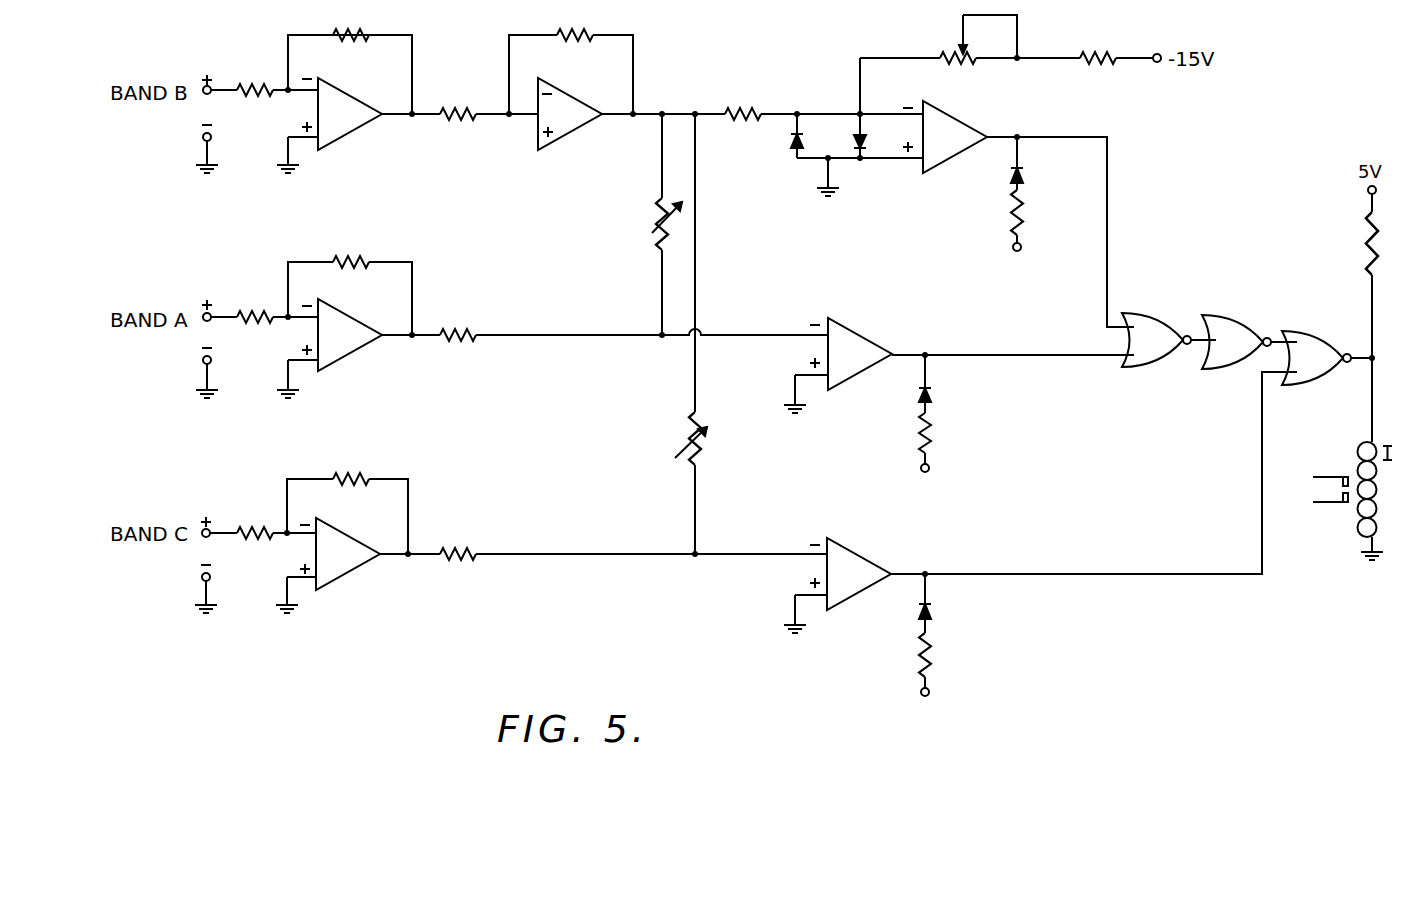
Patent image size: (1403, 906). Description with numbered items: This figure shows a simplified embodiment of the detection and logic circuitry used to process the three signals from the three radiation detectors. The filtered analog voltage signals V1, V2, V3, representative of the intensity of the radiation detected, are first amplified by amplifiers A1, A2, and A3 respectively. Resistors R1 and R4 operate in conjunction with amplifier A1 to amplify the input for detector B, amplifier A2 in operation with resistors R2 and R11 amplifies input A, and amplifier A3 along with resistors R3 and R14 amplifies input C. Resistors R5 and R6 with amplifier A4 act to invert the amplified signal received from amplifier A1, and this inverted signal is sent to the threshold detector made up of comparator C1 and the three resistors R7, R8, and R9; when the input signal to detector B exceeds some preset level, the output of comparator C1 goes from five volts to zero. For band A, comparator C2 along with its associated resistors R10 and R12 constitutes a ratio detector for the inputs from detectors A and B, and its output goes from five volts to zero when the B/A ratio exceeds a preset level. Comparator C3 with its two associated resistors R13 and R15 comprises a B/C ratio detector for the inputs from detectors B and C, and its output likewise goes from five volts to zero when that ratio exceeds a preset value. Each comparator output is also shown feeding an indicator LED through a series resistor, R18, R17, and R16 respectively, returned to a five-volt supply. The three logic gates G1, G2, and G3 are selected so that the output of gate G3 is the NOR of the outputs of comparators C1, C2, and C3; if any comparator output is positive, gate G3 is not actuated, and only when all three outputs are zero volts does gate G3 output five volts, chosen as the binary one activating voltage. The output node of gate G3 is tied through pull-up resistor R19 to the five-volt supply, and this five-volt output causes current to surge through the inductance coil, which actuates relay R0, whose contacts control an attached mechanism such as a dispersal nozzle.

The filtered analog voltage signal V1 is at (207, 111).
The filtered analog voltage signal V2 is at (207, 336).
The filtered analog voltage signal V3 is at (206, 552).
The resistor R1 is at (255, 76).
The resistor R2 is at (255, 303).
The resistor R3 is at (255, 519).
The resistor R4 is at (351, 23).
The resistor R5 is at (458, 99).
The resistor R6 is at (575, 23).
The resistor R7 is at (743, 99).
The resistor R8 is at (958, 73).
The resistor R9 is at (1098, 44).
The resistor R10 is at (647, 224).
The resistor R11 is at (355, 250).
The resistor R12 is at (461, 319).
The resistor R13 is at (677, 334).
The resistor R14 is at (355, 467).
The resistor R15 is at (463, 538).
The LED resistor R16 is at (948, 672).
The LED resistor R17 is at (948, 451).
The LED resistor R18 is at (1037, 217).
The pull-up resistor R19 is at (1353, 243).
The relay R0 is at (1352, 489).
The amplifier A1 is at (342, 114).
The amplifier A2 is at (342, 335).
The amplifier A3 is at (340, 554).
The amplifier A4 is at (570, 114).
The comparator C1 is at (945, 137).
The comparator C2 is at (851, 354).
The comparator C3 is at (850, 574).
The logic gate G1 is at (1150, 313).
The logic gate G2 is at (1225, 318).
The logic gate G3 is at (1313, 333).
The light emitting diode LED is at (993, 378).